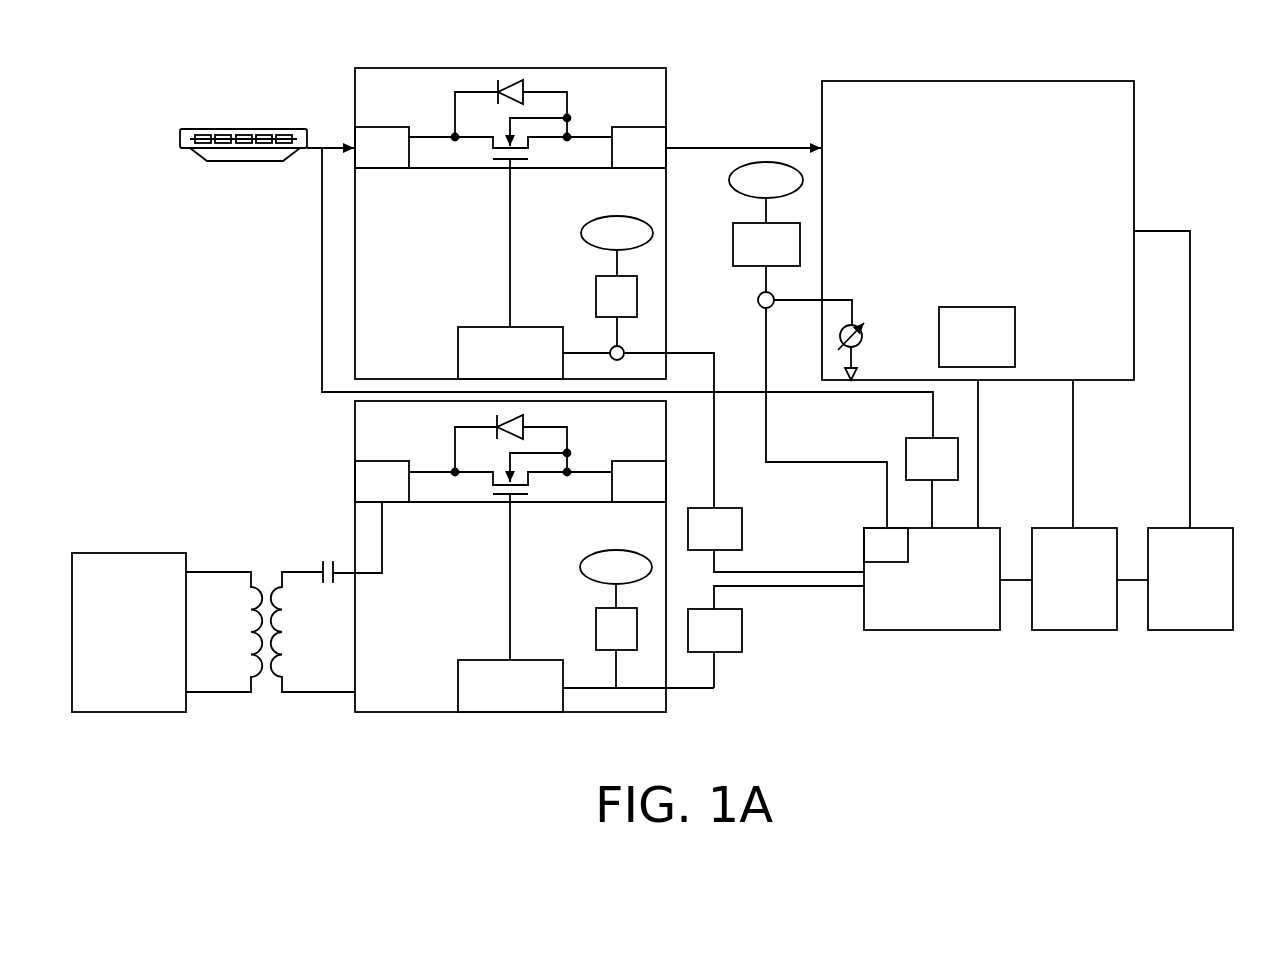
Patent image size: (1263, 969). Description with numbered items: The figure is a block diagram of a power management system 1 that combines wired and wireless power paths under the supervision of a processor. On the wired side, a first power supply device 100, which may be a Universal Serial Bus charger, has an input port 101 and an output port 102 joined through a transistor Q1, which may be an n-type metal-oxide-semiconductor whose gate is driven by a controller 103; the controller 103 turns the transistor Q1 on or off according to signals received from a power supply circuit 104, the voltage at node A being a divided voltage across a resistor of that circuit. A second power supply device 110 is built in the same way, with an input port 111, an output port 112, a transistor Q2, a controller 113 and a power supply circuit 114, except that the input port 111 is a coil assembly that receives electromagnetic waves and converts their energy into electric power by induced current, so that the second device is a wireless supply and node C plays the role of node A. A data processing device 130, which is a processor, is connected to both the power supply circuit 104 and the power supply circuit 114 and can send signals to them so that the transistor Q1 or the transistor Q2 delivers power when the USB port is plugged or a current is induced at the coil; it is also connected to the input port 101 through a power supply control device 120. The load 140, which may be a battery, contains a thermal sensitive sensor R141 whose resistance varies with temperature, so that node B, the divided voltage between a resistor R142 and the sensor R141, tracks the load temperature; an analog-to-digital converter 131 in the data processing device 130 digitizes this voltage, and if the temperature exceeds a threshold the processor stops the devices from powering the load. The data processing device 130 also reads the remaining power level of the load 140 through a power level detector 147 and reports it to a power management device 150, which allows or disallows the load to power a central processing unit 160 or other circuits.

The power management system 1 is at (1203, 59).
The first power supply device 100 is at (656, 47).
The input port 101 is at (368, 158).
The output port 102 is at (625, 158).
The controller 103 is at (497, 363).
The power supply circuit 104 is at (701, 539).
The second power supply device 110 is at (338, 436).
The input port 111 is at (368, 492).
The output port 112 is at (625, 492).
The controller 113 is at (497, 696).
The power supply circuit 114 is at (701, 640).
The power supply control device 120 is at (918, 469).
The data processing device 130 is at (918, 595).
The analog-to-digital converter 131 is at (874, 555).
The load 140 is at (962, 245).
The power level detector 147 is at (963, 347).
The power management device 150 is at (1060, 595).
The central processing unit 160 is at (1176, 595).
The transistor Q1 is at (510, 203).
The transistor Q2 is at (510, 537).
The thermal sensitive sensor R141 is at (842, 340).
The resistor R142 is at (712, 297).